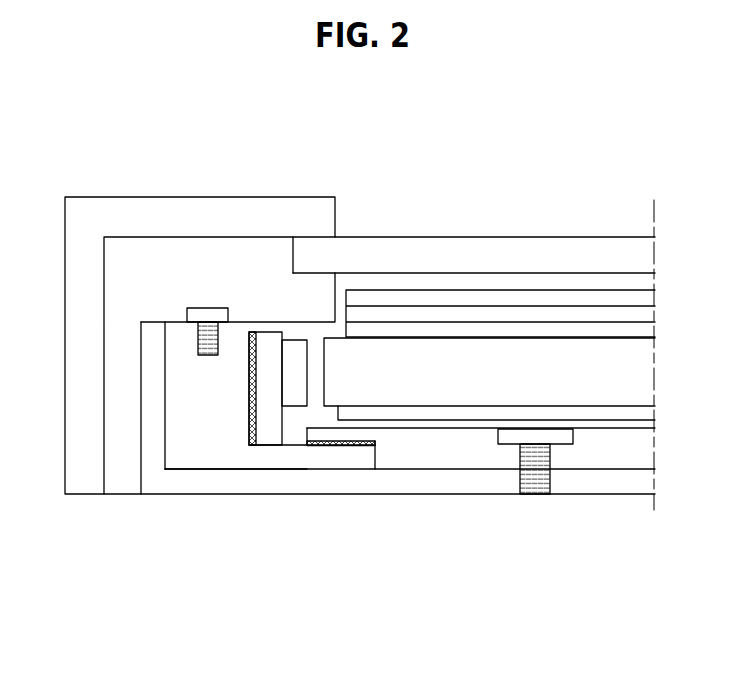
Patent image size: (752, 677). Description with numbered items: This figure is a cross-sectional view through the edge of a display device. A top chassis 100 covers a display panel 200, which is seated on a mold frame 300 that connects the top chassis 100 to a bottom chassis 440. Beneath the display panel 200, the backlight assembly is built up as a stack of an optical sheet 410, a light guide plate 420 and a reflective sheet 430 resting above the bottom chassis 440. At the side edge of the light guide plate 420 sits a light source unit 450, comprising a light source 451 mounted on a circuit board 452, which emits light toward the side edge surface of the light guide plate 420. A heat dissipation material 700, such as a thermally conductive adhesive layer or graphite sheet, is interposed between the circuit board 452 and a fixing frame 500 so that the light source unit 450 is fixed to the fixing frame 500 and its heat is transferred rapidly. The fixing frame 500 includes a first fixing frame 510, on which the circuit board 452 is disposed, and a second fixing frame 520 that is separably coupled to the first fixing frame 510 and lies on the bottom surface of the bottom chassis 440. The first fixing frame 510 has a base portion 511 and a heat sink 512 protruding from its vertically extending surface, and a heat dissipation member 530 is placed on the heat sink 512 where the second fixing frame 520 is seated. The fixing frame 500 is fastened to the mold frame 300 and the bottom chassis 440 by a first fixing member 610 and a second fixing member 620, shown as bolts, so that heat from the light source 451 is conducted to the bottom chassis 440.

The top chassis 100 is at (105, 200).
The display panel 200 is at (557, 248).
The mold frame 300 is at (196, 248).
The optical sheet 410 is at (667, 292).
The light guide plate 420 is at (641, 364).
The reflective sheet 430 is at (641, 412).
The bottom chassis 440 is at (641, 482).
The light source unit 450 is at (385, 156).
The light source 451 is at (293, 358).
The circuit board 452 is at (264, 352).
The fixing frame 500 is at (438, 605).
The first fixing frame 510 is at (298, 557).
The base portion 511 is at (216, 422).
The heat sink 512 is at (298, 459).
The second fixing frame 520 is at (428, 453).
The heat dissipation member 530 is at (352, 447).
The first fixing member 610 is at (207, 338).
The second fixing member 620 is at (535, 480).
The heat dissipation material 700 is at (249, 390).